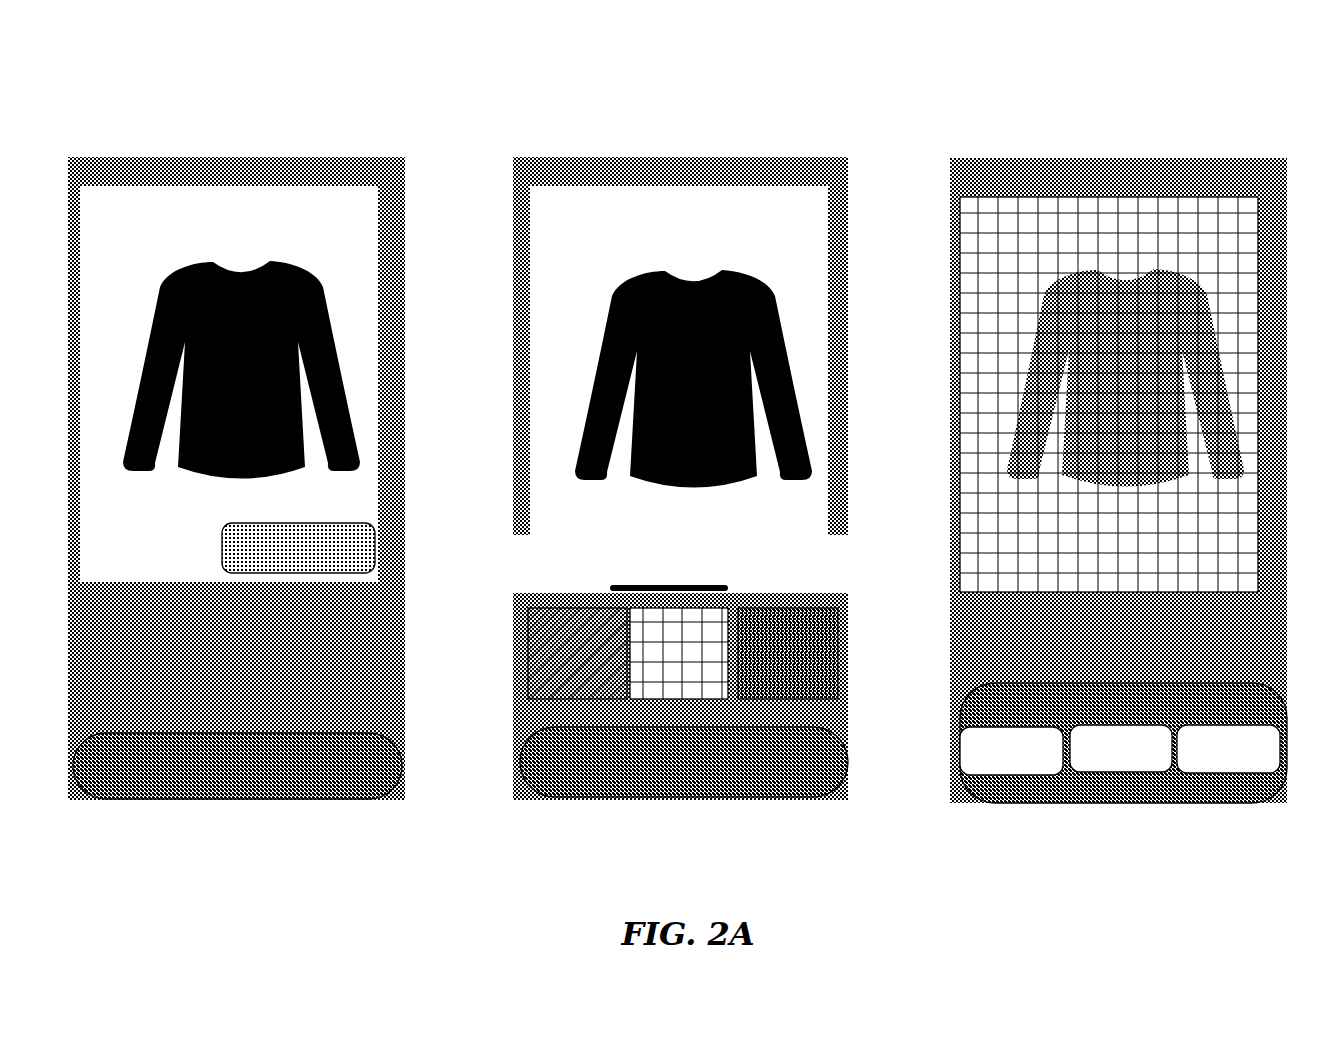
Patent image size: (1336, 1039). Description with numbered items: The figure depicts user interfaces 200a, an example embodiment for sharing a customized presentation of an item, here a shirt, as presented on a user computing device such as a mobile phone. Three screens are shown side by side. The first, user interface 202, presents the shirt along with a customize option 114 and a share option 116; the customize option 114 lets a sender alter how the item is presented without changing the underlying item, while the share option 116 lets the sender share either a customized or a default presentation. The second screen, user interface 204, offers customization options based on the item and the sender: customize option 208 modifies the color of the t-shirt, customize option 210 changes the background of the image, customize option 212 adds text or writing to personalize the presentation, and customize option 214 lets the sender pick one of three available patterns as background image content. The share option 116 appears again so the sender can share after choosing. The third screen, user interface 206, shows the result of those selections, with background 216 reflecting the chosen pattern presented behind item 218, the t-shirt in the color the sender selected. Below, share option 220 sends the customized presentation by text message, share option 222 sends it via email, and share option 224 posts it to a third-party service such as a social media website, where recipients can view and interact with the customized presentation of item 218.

The user interfaces 200a is at (648, 56).
The customize option 114 is at (298, 573).
The share option 116 is at (383, 803).
The user interface 202 is at (237, 514).
The user interface 204 is at (695, 511).
The user interface 206 is at (1082, 516).
The customize option 208 is at (541, 550).
The customize option 210 is at (630, 560).
The customize option 212 is at (788, 554).
The customize option 214 is at (718, 652).
The background 216 is at (988, 402).
The item 218 is at (1125, 421).
The share option 220 is at (1017, 730).
The share option 222 is at (1120, 733).
The share option 224 is at (1245, 730).